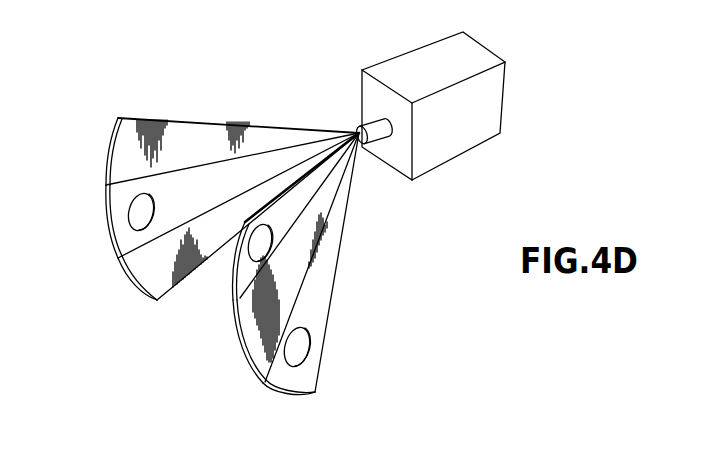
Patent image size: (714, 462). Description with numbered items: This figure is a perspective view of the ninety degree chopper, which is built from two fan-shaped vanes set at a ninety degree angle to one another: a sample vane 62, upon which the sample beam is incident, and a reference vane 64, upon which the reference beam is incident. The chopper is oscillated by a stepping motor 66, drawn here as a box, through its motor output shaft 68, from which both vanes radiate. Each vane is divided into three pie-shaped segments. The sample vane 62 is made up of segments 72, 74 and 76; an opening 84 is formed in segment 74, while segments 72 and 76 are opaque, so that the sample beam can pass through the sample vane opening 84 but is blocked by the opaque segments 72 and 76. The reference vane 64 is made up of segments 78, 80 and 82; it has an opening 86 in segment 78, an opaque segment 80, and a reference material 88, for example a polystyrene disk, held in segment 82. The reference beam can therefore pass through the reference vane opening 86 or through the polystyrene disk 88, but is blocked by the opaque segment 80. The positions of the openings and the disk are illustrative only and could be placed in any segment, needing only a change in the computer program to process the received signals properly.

The sample vane 62 is at (202, 125).
The reference vane 64 is at (335, 288).
The stepping motor 66 is at (503, 98).
The motor output shaft 68 is at (375, 147).
The segment 72 is at (110, 140).
The segment 74 is at (110, 230).
The segment 76 is at (128, 283).
The segment 78 is at (233, 300).
The segment 80 is at (242, 355).
The segment 82 is at (315, 392).
The opening 84 is at (130, 212).
The opening 86 is at (253, 252).
The reference material 88 is at (310, 343).